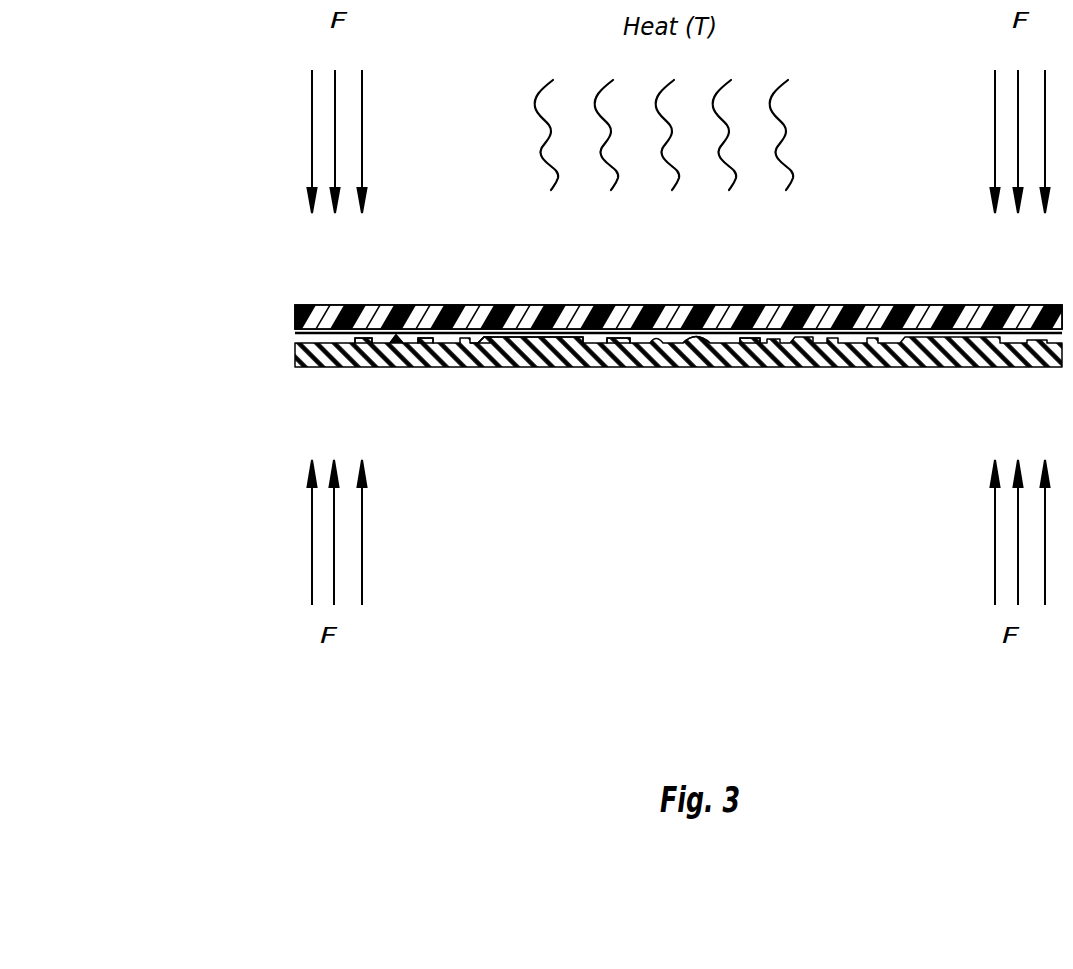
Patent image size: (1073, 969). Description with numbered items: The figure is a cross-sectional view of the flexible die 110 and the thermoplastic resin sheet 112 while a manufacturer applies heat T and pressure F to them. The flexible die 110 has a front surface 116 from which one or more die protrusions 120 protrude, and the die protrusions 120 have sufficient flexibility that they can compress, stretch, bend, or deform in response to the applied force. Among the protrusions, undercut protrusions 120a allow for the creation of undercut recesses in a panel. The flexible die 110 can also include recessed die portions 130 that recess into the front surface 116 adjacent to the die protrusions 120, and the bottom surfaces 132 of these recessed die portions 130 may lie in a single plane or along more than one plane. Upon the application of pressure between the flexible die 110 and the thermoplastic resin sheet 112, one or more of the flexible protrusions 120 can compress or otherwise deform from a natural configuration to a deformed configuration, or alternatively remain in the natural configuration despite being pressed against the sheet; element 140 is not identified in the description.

The flexible die 110 is at (916, 368).
The thermoplastic resin sheet 112 is at (340, 305).
The front surface 116 is at (305, 342).
The die protrusions 120 is at (543, 337).
The undercut protrusions 120a is at (353, 345).
The recessed die portions 130 is at (480, 335).
The bottom surfaces 132 is at (508, 343).
The void 140 is at (686, 345).